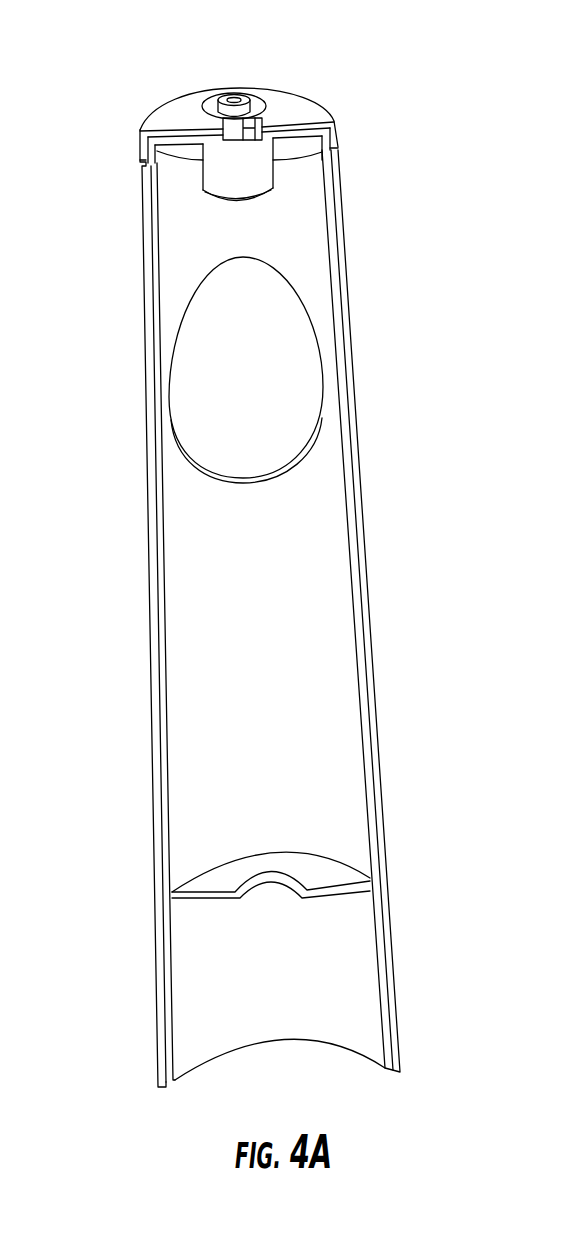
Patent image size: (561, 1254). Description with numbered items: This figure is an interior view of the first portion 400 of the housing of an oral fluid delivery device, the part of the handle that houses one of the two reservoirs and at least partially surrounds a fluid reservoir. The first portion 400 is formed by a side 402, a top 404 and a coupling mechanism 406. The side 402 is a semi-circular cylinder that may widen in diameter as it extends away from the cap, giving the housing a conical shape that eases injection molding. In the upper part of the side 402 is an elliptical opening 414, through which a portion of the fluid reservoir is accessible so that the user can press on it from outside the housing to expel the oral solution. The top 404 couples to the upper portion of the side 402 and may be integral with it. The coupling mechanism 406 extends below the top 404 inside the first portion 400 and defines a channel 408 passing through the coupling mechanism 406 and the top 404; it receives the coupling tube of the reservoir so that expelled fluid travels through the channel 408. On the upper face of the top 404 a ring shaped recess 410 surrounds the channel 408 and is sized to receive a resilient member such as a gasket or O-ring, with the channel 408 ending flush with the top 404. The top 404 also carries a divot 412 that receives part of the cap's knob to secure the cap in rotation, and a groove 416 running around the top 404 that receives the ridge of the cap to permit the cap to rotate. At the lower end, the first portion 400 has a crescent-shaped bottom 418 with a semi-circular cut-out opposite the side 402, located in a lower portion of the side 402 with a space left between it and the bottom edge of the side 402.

The first portion 400 is at (255, 544).
The side 402 is at (330, 607).
The top 404 is at (298, 104).
The coupling mechanism 406 is at (222, 177).
The channel 408 is at (231, 92).
The ring shaped recess 410 is at (254, 100).
The divot 412 is at (220, 125).
The opening 414 is at (192, 398).
The groove 416 is at (140, 162).
The bottom 418 is at (338, 867).